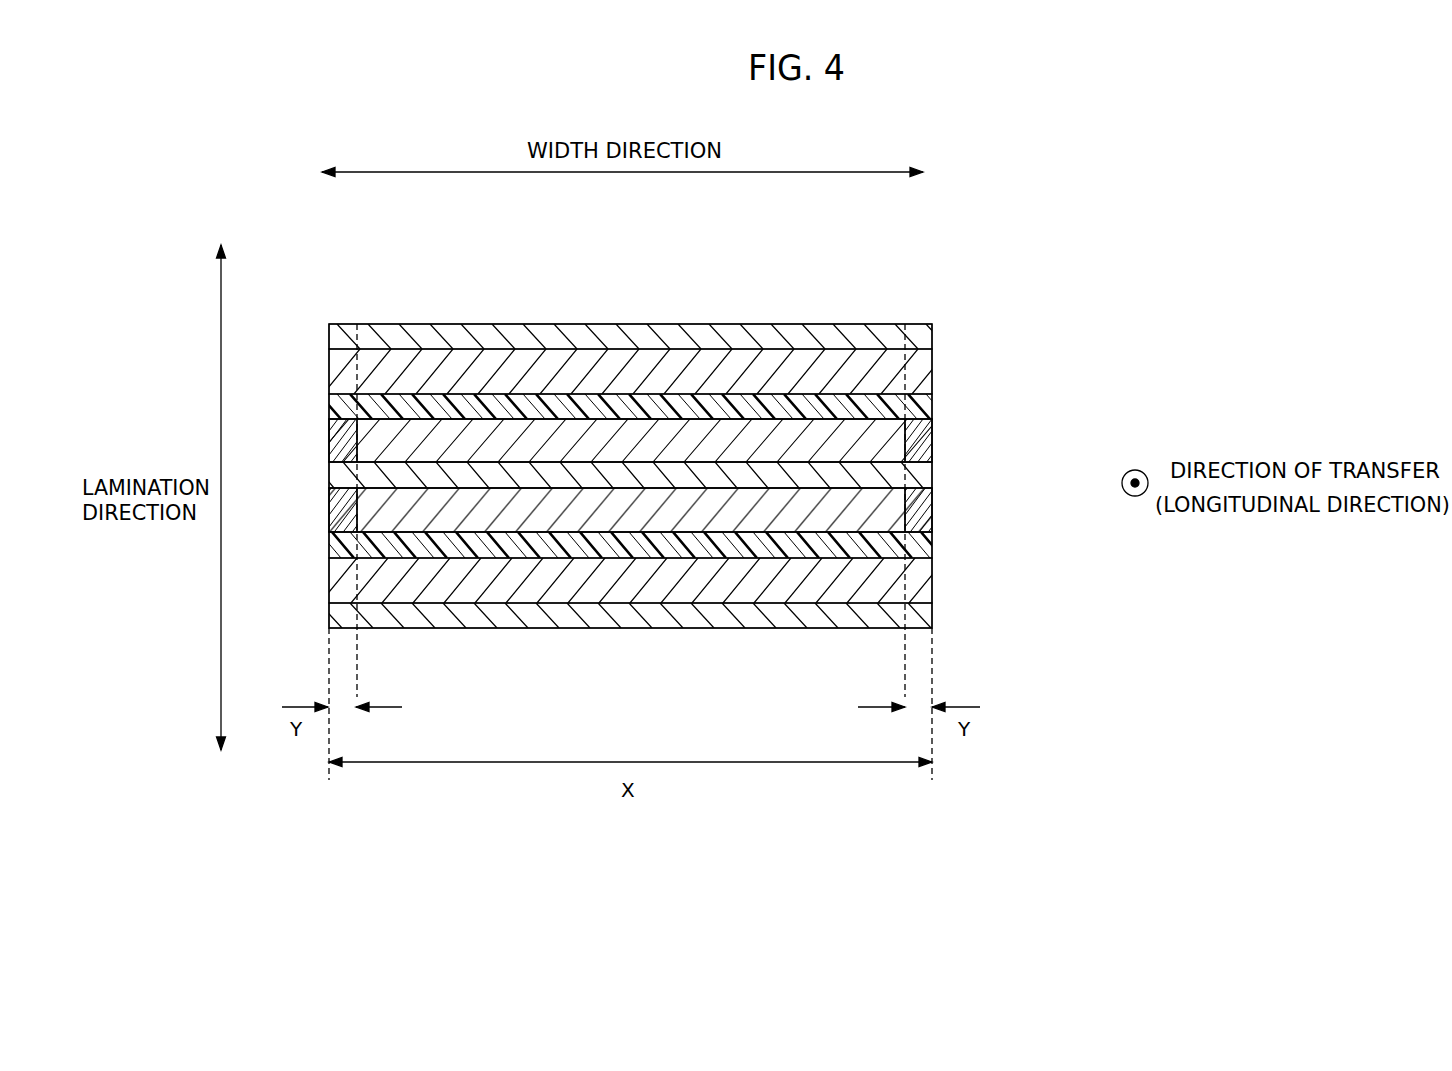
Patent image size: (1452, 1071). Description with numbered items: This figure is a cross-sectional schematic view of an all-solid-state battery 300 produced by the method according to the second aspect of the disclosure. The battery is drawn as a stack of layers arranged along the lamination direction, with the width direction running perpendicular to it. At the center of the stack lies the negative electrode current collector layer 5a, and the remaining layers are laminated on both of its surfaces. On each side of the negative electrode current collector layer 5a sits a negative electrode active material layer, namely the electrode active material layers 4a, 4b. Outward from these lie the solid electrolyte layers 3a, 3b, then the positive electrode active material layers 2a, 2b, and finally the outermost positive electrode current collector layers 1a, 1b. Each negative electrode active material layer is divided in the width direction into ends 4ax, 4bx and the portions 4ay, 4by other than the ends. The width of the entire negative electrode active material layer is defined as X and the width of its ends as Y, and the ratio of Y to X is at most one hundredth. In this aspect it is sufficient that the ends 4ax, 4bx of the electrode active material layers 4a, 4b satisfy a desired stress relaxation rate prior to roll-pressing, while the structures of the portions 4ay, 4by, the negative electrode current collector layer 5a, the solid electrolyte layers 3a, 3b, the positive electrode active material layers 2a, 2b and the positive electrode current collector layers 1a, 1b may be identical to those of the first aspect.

The all-solid-state battery 300 is at (643, 297).
The positive electrode current collector layer 1a is at (927, 341).
The positive electrode current collector layer 1b is at (928, 621).
The positive electrode active material layer 2a is at (926, 377).
The positive electrode active material layer 2b is at (928, 590).
The solid electrolyte layer 3a is at (926, 409).
The solid electrolyte layer 3b is at (932, 548).
The electrode active material layer 4a is at (703, 434).
The end of electrode active material layer 4ax is at (885, 441).
The portion other than the ends of the negative electrode active material layer 4ay is at (933, 432).
The electrode active material layer 4b is at (703, 520).
The end of electrode active material layer 4bx is at (878, 521).
The portion other than the ends of the negative electrode active material layer 4by is at (932, 522).
The negative electrode current collector layer 5a is at (925, 474).